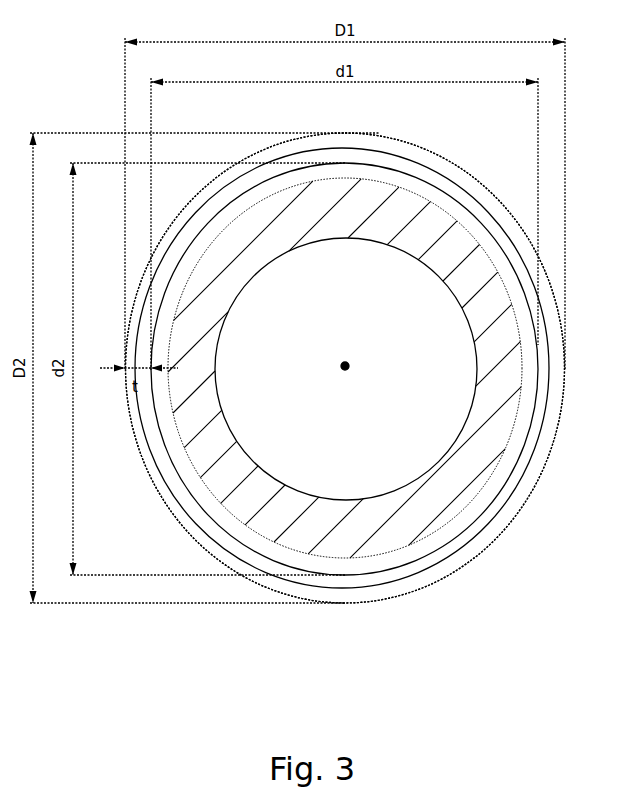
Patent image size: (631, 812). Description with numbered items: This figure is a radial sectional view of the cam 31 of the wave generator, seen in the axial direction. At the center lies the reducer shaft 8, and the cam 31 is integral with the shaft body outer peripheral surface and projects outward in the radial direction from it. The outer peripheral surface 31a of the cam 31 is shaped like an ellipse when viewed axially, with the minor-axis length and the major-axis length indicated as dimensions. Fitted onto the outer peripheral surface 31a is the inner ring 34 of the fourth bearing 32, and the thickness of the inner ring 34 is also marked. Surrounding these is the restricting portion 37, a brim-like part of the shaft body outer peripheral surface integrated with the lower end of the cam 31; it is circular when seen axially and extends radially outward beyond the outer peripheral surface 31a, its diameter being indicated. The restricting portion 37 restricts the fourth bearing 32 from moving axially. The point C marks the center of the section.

The reducer shaft 8 is at (456, 490).
The cam 31 is at (432, 546).
The outer peripheral surface of the cam 31a is at (520, 467).
The fourth bearing 32 is at (345, 368).
The inner ring 34 is at (379, 602).
The restricting portion 37 is at (460, 178).
The center axis C is at (346, 376).